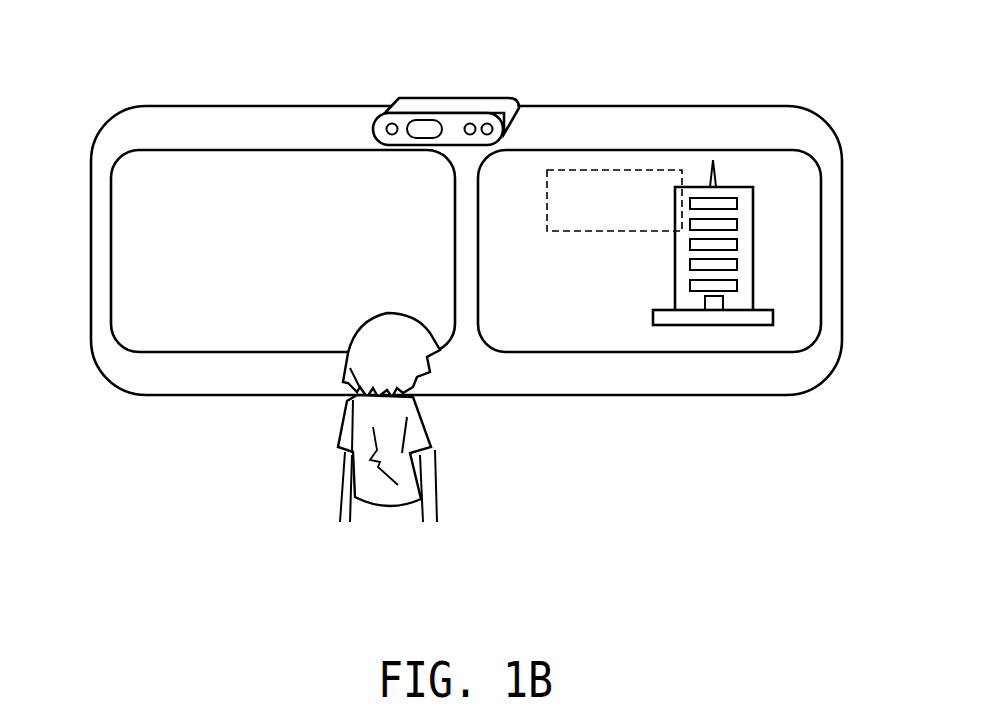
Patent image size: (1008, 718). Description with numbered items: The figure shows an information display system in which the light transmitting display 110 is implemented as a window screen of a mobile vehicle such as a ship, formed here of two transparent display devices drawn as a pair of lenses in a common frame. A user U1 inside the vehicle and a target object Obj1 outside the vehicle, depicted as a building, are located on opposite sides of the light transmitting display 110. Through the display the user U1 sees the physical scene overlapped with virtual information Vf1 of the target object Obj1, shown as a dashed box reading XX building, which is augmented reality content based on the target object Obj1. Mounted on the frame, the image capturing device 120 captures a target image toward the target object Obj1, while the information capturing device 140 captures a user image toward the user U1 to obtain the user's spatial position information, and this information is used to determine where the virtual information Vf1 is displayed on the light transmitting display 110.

The light transmitting display 110 is at (111, 248).
The image capturing device 120 is at (484, 98).
The information capturing device 140 is at (375, 114).
The virtual information Vf1 is at (657, 170).
The target object Obj1 is at (773, 318).
The user U1 is at (425, 485).